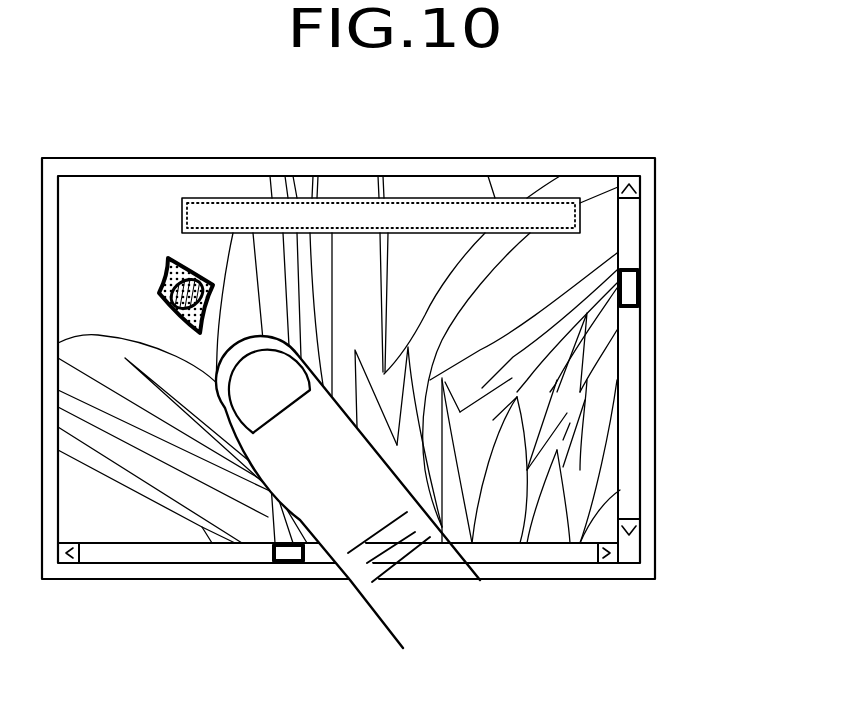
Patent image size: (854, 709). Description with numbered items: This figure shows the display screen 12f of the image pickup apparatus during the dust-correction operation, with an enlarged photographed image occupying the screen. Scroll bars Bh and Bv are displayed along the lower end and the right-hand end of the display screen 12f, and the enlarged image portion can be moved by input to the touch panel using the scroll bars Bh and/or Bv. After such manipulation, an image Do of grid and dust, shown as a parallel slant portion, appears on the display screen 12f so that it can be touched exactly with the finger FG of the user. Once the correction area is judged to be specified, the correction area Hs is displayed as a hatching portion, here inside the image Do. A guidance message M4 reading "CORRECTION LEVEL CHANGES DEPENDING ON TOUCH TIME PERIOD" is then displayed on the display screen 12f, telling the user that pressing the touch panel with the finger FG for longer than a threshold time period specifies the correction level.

The display screen 12f is at (178, 580).
The message M4 is at (466, 198).
The image of the grid and dust Do is at (170, 262).
The correction area Hs is at (168, 296).
The vertical scroll bar Bv is at (644, 287).
The horizontal scroll bar Bh is at (278, 564).
The finger FG is at (407, 623).